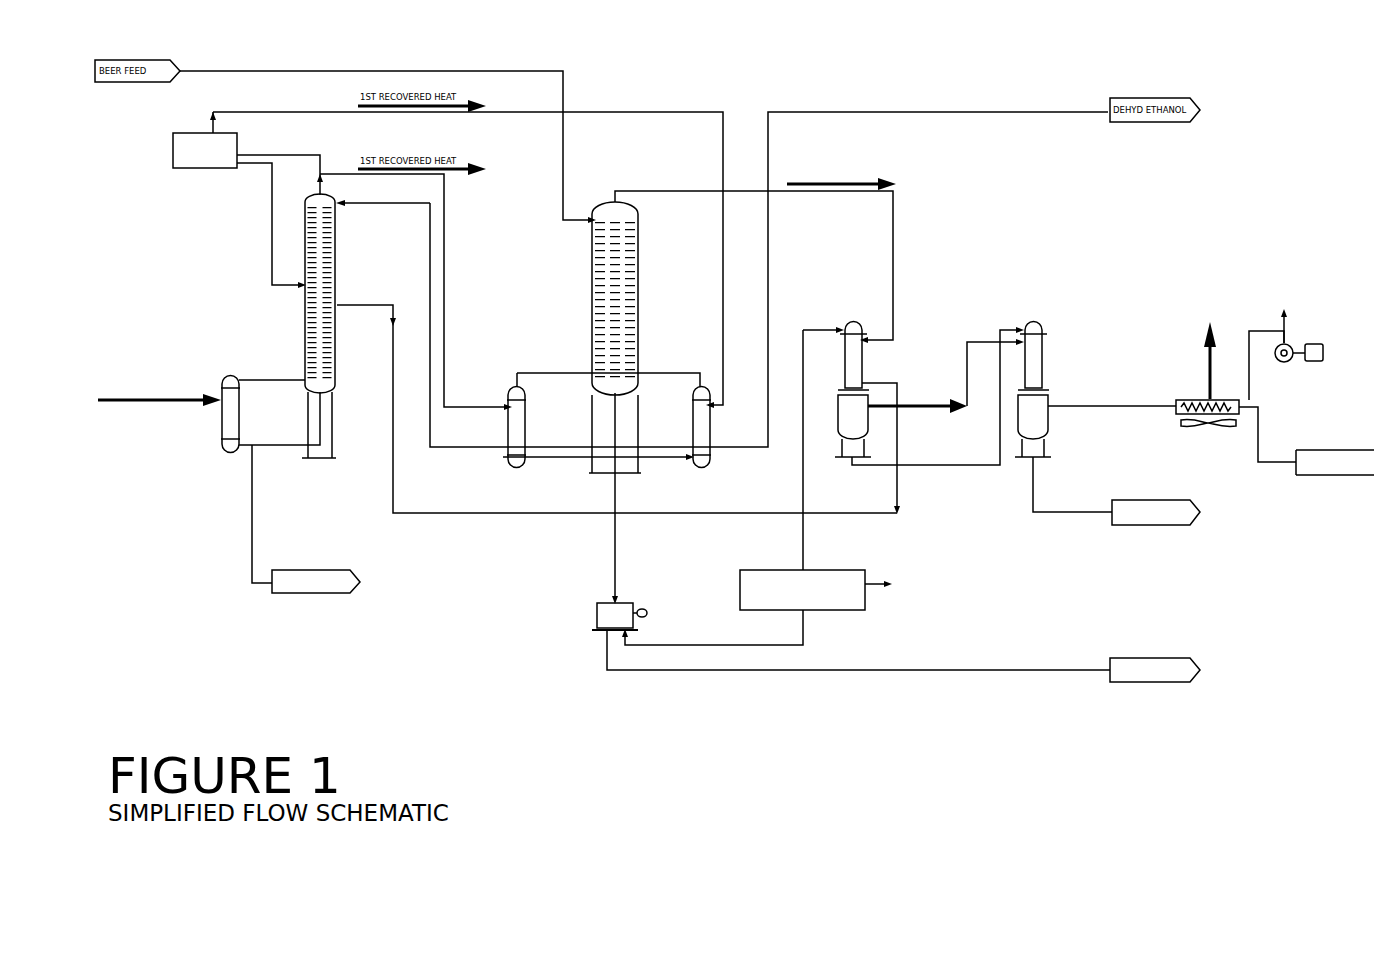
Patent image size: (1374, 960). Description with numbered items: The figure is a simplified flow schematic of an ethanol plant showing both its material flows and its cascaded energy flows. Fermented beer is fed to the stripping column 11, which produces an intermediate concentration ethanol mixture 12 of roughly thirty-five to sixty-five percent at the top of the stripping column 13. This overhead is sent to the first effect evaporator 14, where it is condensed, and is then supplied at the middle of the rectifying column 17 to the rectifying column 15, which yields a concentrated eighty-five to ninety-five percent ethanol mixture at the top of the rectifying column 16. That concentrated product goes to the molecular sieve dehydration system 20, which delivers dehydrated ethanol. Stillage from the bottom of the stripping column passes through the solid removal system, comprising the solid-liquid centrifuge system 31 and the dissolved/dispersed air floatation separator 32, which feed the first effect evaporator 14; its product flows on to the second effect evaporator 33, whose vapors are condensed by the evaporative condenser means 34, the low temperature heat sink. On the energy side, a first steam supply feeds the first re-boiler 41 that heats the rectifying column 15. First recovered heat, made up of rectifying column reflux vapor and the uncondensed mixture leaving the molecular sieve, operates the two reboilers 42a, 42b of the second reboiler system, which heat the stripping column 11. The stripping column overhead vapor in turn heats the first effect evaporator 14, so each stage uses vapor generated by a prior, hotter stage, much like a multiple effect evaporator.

The stripping column 11 is at (638, 263).
The intermediate concentration ethanol mixture 12 is at (740, 191).
The top of the stripping column 13 is at (598, 207).
The first effect evaporator 14 is at (865, 363).
The rectifying column 15 is at (338, 263).
The top of the rectifying column 16 is at (307, 197).
The middle of the rectifying column 17 is at (337, 305).
The dehydration system 20 is at (173, 162).
The solid-liquid centrifuge system 31 is at (597, 620).
The dissolved/dispersed air floatation separator 32 is at (865, 612).
The second effect evaporator 33 is at (1048, 360).
The evaporative condenser means 34 is at (1210, 399).
The first re-boiler 41 is at (222, 410).
The reboiler 42a is at (508, 420).
The reboiler 42b is at (693, 430).